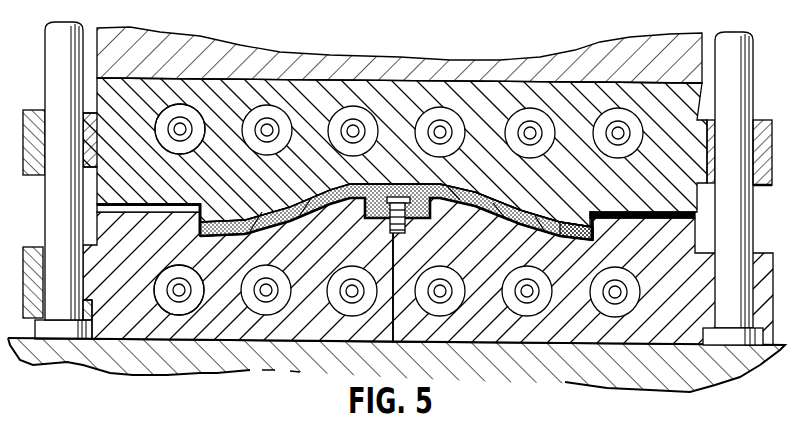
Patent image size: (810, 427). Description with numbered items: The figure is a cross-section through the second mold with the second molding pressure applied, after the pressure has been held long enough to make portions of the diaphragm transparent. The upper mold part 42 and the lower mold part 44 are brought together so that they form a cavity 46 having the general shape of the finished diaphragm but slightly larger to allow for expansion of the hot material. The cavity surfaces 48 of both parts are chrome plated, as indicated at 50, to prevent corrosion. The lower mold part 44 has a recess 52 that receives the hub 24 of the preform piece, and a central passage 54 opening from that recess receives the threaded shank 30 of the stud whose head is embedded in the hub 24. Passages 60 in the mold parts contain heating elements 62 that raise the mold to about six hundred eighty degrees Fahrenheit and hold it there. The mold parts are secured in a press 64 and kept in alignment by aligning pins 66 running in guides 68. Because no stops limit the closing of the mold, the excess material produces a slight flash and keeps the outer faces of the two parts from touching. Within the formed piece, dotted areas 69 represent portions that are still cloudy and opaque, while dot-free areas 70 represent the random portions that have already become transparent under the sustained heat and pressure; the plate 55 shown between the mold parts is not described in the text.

The hub 24 is at (385, 182).
The threaded shank 30 is at (398, 234).
The upper mold part 42 is at (580, 96).
The lower mold part 44 is at (35, 257).
The cavity 46 is at (283, 228).
The cavity surfaces 48 is at (227, 236).
The chrome plating 50 is at (487, 238).
The recess 52 is at (500, 205).
The central passage 54 is at (393, 305).
The retaining plate 55 is at (620, 212).
The passages 60 is at (188, 120).
The heating elements 62 is at (203, 121).
The press 64 is at (150, 49).
The aligning pins 66 is at (740, 83).
The guides 68 is at (760, 122).
The dotted areas 69 is at (578, 240).
The dot-free areas 70 is at (338, 82).